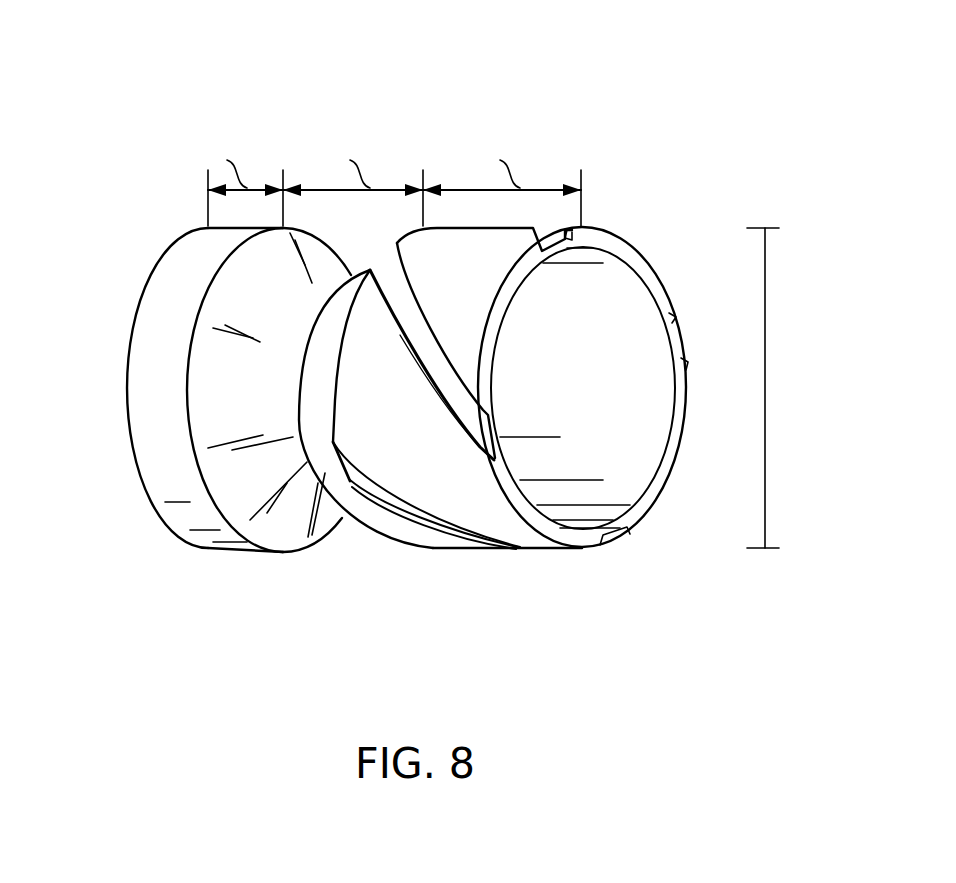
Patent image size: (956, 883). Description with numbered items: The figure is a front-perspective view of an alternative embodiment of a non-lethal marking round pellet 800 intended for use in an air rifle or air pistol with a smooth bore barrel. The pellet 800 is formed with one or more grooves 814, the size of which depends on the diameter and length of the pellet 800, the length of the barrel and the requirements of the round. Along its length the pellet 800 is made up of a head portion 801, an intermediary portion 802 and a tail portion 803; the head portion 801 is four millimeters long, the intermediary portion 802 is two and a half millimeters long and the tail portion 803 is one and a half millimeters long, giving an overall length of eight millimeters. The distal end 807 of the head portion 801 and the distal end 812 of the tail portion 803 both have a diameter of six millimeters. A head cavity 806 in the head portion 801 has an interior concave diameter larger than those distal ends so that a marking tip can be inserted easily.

The non-lethal marking round pellet 800 is at (683, 104).
The head portion 801 is at (400, 465).
The intermediary portion 802 is at (310, 462).
The tail portion 803 is at (153, 440).
The head cavity 806 is at (633, 455).
The distal end of the head portion 807 is at (640, 265).
The distal end of the tail portion 812 is at (137, 320).
The groove 814 is at (467, 410).